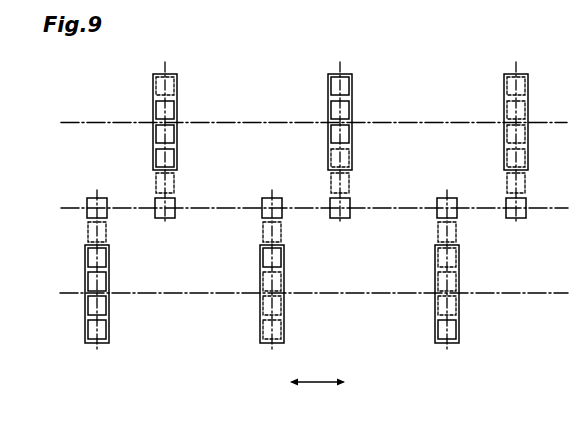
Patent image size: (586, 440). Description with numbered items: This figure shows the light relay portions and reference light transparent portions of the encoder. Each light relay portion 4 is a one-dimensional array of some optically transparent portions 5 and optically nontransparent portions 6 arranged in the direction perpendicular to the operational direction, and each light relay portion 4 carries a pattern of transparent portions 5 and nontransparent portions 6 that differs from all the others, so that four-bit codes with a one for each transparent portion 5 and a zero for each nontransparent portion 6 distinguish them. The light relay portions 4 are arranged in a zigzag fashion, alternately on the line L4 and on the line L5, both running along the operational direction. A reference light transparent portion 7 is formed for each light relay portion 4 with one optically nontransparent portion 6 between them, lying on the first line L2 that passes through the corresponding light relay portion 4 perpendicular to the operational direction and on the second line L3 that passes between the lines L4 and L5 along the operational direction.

The light relay portion 4 is at (164, 74).
The optically transparent portion 5 is at (174, 110).
The optically nontransparent portion 6 is at (174, 86).
The reference light transparent portion 7 is at (160, 219).
The first line L2 is at (165, 224).
The second line L3 is at (70, 208).
The line L4 is at (70, 122).
The line L5 is at (70, 293).